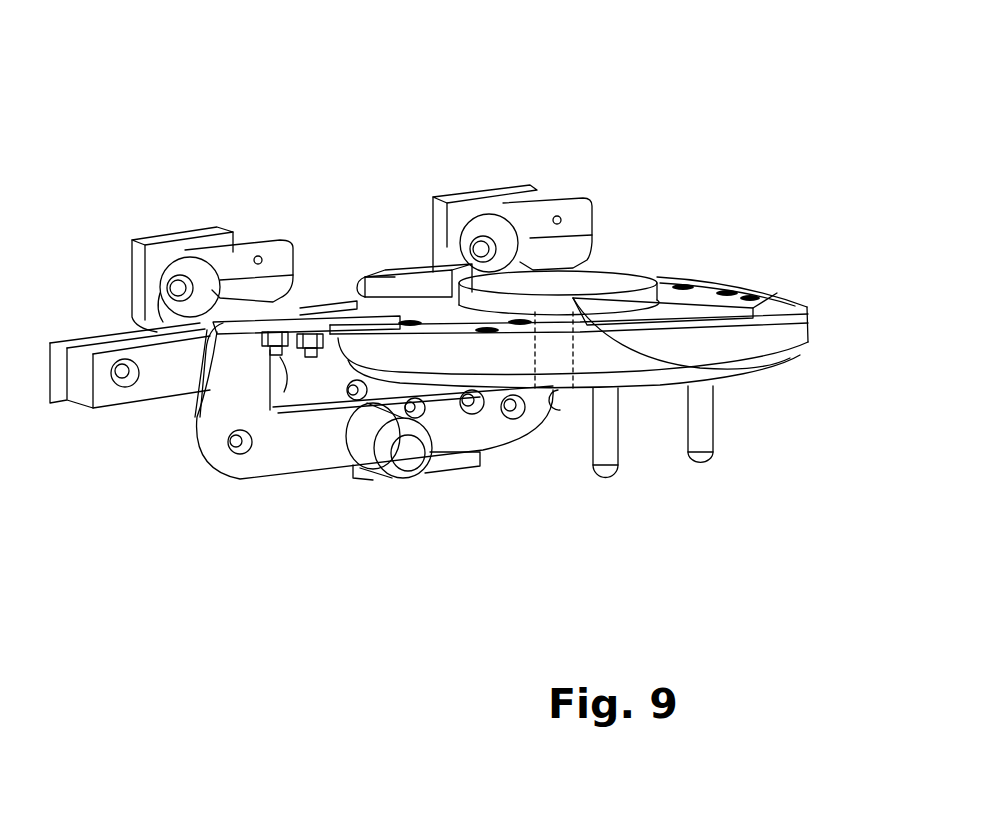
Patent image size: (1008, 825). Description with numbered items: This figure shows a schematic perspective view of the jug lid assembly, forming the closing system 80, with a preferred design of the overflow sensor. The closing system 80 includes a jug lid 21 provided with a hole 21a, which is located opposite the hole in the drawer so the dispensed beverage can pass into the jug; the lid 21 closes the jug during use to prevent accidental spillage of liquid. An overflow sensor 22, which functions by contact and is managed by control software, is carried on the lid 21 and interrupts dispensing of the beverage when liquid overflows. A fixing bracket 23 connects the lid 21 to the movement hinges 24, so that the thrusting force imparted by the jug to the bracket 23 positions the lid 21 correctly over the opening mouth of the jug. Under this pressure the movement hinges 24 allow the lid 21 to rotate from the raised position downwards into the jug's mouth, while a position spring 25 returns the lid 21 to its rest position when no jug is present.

The closing system 80 is at (641, 128).
The movement hinge 24 is at (533, 223).
The jug lid 21 is at (773, 337).
The hole 21a is at (560, 300).
The overflow sensor 22 is at (703, 445).
The fixing bracket 23 is at (300, 462).
The position spring 25 is at (195, 417).